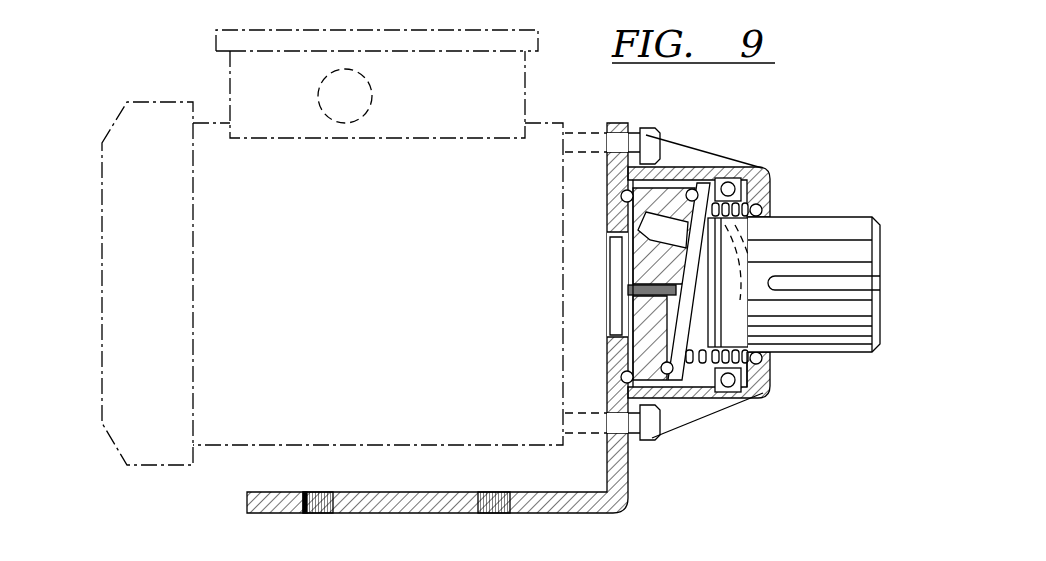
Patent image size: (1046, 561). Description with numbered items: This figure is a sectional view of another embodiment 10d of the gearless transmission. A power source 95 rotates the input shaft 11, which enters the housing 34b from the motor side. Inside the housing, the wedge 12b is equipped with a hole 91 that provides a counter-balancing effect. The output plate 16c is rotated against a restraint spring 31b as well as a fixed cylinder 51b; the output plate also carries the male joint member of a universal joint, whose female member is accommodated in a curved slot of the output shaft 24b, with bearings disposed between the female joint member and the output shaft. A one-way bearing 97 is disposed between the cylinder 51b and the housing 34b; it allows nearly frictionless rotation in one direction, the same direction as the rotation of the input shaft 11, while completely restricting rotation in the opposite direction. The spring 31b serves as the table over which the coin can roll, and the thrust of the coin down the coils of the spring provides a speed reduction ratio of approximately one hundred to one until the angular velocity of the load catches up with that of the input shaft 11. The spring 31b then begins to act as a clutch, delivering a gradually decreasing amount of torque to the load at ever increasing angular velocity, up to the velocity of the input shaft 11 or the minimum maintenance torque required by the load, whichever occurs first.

The embodiment of the gearless transmission 10d is at (797, 160).
The input shaft 11 is at (640, 284).
The housing 12b is at (666, 192).
The output plate 16c is at (714, 192).
The output shaft 24b is at (835, 252).
The restraint spring 31b is at (738, 200).
The housing 34b is at (772, 384).
The fixed cylinder 51b is at (703, 393).
The hole 91 is at (670, 215).
The power source 95 is at (107, 285).
The one-way bearing 97 is at (740, 398).